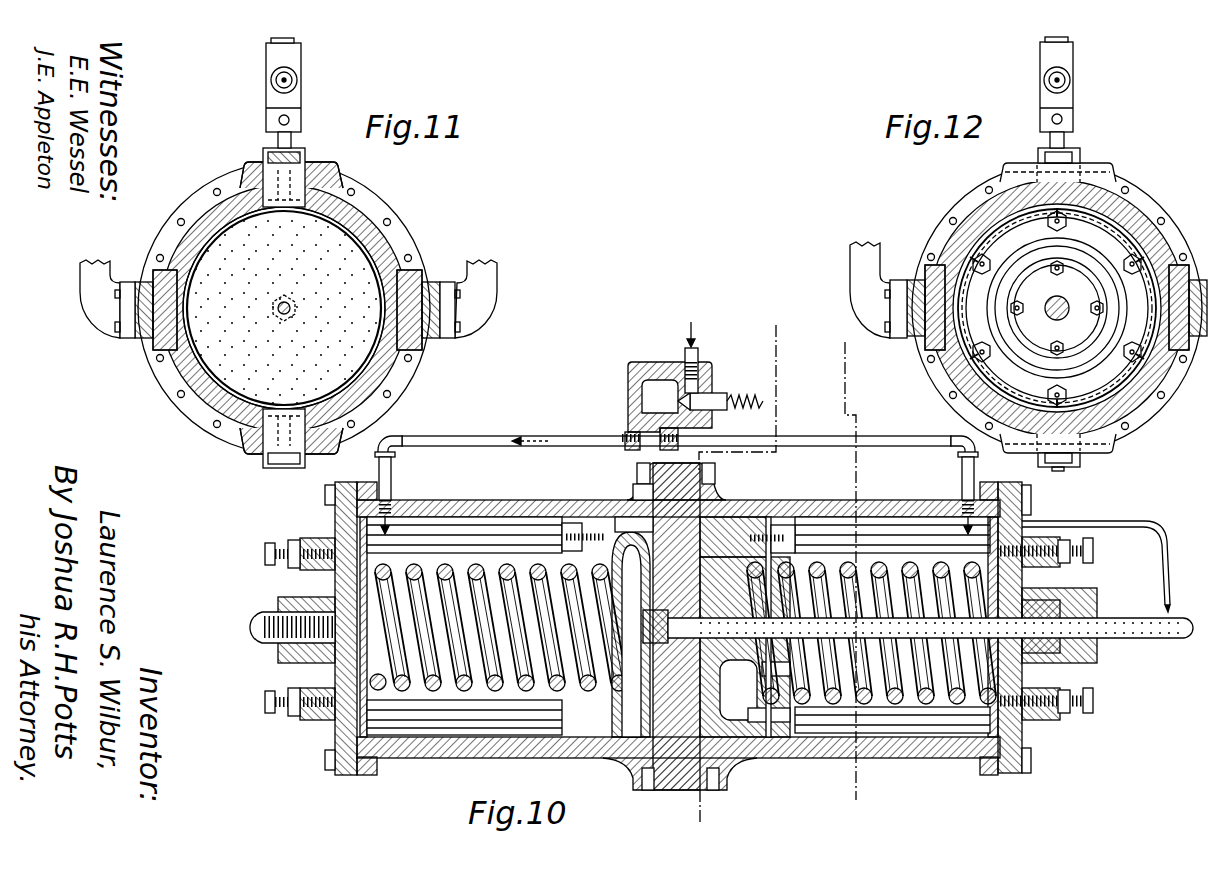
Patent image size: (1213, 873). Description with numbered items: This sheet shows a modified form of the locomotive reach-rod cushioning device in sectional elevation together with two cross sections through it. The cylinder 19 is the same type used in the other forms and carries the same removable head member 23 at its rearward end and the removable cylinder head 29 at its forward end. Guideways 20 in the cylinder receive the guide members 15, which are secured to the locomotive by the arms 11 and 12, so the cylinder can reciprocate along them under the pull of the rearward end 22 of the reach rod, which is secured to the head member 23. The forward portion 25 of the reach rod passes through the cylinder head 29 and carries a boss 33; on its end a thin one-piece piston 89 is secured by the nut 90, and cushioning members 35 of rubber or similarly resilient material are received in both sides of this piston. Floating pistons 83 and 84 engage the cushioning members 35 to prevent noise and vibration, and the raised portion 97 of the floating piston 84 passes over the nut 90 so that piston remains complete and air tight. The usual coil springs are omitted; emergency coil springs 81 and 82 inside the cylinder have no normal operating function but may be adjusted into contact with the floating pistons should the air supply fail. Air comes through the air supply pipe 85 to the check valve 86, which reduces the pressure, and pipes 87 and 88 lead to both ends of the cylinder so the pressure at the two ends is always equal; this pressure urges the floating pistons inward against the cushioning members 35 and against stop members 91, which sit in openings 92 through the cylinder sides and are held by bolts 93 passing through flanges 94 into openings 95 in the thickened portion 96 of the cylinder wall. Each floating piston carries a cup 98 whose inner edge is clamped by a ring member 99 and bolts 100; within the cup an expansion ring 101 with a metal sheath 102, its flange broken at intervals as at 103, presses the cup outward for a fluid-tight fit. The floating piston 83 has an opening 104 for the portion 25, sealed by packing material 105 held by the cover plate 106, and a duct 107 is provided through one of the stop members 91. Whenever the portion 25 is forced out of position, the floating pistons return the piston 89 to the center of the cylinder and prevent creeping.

In FIG. 11, the arm 11 is at (497, 283).
In FIG. 10, the arm 11 is at (780, 333).
In FIG. 11, the arm 12 is at (87, 283).
In FIG. 10, the arm 12 is at (877, 800).
In FIG. 11, the guide member 15 is at (140, 342).
In FIG. 12, the guide member 15 is at (908, 336).
In FIG. 10, the cylinder 19 is at (882, 522).
In FIG. 12, the guideway 20 is at (912, 264).
In FIG. 10, the rearward end of locomotive reach rod 22 is at (259, 643).
In FIG. 10, the removable head member 23 is at (337, 521).
In FIG. 11, the forward portion of locomotive reach rod 25 is at (292, 310).
In FIG. 10, the forward portion of locomotive reach rod 25 is at (1152, 639).
In FIG. 10, the removable cylinder head 29 is at (1010, 680).
In FIG. 10, the boss 33 is at (628, 515).
In FIG. 11, the cushioning member 35 is at (340, 245).
In FIG. 10, the cushioning member 35 is at (722, 517).
In FIG. 10, the emergency coil spring 81 is at (760, 517).
In FIG. 10, the emergency coil spring 82 is at (462, 690).
In FIG. 10, the floating piston 83 is at (783, 517).
In FIG. 10, the floating piston 84 is at (602, 510).
In FIG. 11, the air supply pipe 85 is at (297, 41).
In FIG. 10, the air supply pipe 85 is at (686, 349).
In FIG. 11, the check valve 86 is at (298, 80).
In FIG. 10, the check valve 86 is at (630, 389).
In FIG. 11, the pipe 87 is at (290, 120).
In FIG. 12, the pipe 87 is at (1064, 121).
In FIG. 10, the pipe 87 is at (876, 436).
In FIG. 10, the pipe 88 is at (472, 436).
In FIG. 11, the thin one-piece piston 89 is at (380, 252).
In FIG. 11, the nut 90 is at (298, 288).
In FIG. 11, the stop member 91 is at (294, 172).
In FIG. 11, the opening 92 is at (262, 162).
In FIG. 10, the bolt 93 is at (646, 468).
In FIG. 10, the flange 94 is at (642, 779).
In FIG. 10, the opening 95 is at (633, 476).
In FIG. 10, the thickened portion 96 is at (727, 500).
In FIG. 10, the raised portion 97 is at (630, 634).
In FIG. 10, the cup 98 is at (560, 521).
In FIG. 10, the ring member 99 is at (563, 548).
In FIG. 10, the bolt 100 is at (565, 535).
In FIG. 12, the expansion ring 101 is at (990, 222).
In FIG. 10, the expansion ring 101 is at (800, 534).
In FIG. 10, the sheath 102 is at (810, 548).
In FIG. 12, the break in flange 103 is at (1128, 213).
In FIG. 10, the opening 104 is at (752, 752).
In FIG. 10, the packing material 105 is at (792, 730).
In FIG. 10, the cover plate 106 is at (858, 700).
In FIG. 10, the duct 107 is at (735, 772).